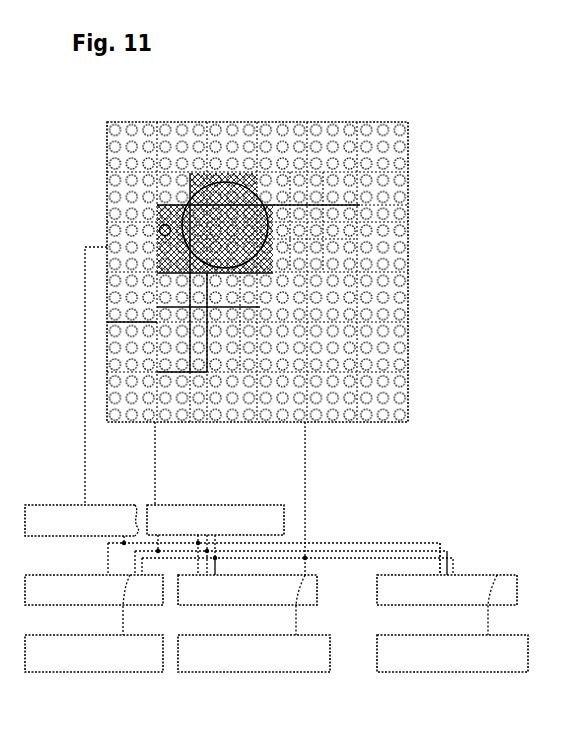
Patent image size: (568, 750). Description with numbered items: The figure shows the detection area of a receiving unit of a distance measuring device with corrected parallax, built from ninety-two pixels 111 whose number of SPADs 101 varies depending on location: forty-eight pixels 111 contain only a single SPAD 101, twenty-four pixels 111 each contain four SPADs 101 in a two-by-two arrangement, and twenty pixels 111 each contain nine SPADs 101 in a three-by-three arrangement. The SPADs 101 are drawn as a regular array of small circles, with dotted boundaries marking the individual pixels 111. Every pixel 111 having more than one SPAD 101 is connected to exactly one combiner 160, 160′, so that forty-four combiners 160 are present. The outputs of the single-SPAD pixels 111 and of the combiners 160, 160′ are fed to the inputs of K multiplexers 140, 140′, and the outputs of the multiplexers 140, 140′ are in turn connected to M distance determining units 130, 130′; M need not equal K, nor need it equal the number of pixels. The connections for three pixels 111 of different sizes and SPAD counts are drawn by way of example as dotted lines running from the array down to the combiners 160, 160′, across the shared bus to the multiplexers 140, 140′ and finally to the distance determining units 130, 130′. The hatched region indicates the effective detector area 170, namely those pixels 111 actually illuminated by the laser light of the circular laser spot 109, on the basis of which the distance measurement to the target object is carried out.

The SPAD 101 is at (405, 263).
The pixel 111 is at (361, 207).
The laser spot 109 is at (189, 206).
The effective detector area 170 is at (166, 225).
The combiner 160 is at (82, 521).
The combiner 160′ is at (215, 521).
The multiplexer 140 is at (94, 590).
The multiplexer 140′ is at (247, 590).
The distance determining unit 130 is at (94, 653).
The distance determining unit 130′ is at (254, 653).